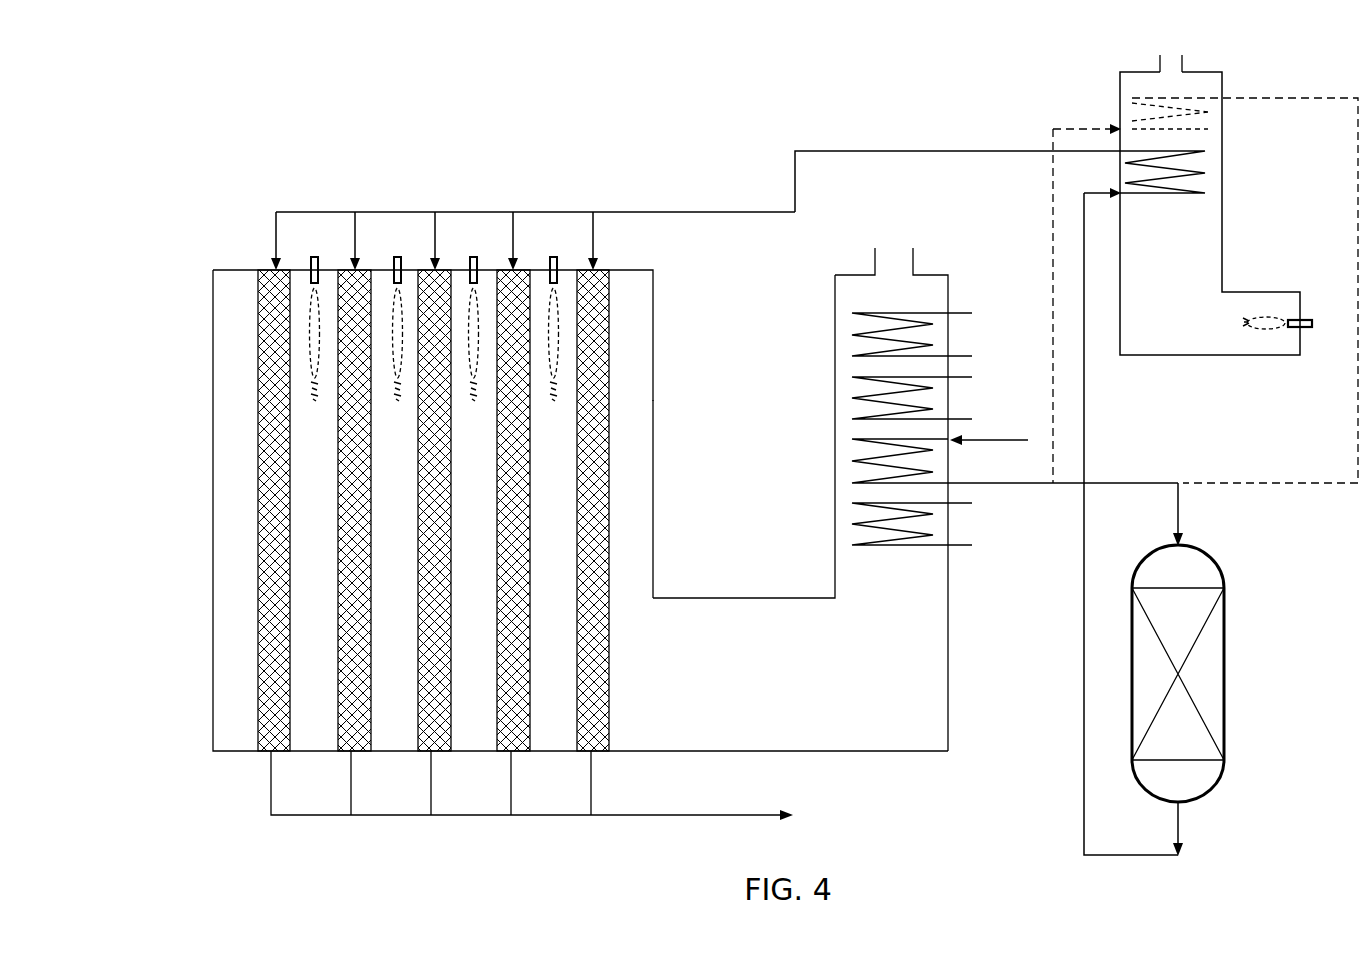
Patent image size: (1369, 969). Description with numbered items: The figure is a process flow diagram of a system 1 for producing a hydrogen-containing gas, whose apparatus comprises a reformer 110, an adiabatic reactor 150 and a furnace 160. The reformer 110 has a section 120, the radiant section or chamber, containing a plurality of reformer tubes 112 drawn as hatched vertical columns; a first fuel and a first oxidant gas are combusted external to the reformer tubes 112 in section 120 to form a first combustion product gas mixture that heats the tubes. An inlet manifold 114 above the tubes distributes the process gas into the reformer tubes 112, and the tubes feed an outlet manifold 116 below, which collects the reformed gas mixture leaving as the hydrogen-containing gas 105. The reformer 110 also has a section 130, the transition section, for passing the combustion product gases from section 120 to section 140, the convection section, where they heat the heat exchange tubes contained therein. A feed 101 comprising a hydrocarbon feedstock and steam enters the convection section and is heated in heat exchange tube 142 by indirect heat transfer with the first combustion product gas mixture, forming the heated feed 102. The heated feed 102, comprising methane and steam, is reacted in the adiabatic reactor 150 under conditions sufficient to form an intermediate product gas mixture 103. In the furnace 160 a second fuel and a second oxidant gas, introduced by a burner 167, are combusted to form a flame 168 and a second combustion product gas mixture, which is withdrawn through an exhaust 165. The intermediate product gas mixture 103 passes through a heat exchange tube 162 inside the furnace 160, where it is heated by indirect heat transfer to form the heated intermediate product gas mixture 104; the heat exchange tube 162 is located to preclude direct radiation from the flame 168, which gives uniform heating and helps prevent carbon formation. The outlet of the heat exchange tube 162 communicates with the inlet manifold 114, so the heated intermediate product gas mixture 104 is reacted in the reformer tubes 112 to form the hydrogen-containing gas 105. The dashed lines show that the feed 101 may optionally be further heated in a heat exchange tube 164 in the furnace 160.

The system 1 is at (536, 118).
The feed 101 is at (975, 440).
The heated feed 102 is at (1180, 525).
The intermediate product gas mixture 103 is at (1180, 840).
The heated intermediate product gas mixture 104 is at (815, 150).
The hydrogen-containing gas 105 is at (690, 818).
The reformer 110 is at (232, 243).
The reformer tubes 112 is at (258, 470).
The inlet manifold 114 is at (482, 212).
The outlet manifold 116 is at (468, 815).
The section 120 is at (627, 415).
The section 130 is at (707, 642).
The section 140 is at (845, 365).
The heat exchange tube 142 is at (858, 460).
The adiabatic reactor 150 is at (1215, 565).
The furnace 160 is at (1222, 205).
The heat exchange tube 162 is at (1190, 168).
The heat exchange tube 164 is at (1185, 98).
The exhaust 165 is at (1179, 58).
The burner 167 is at (1305, 330).
The flame 168 is at (1252, 315).